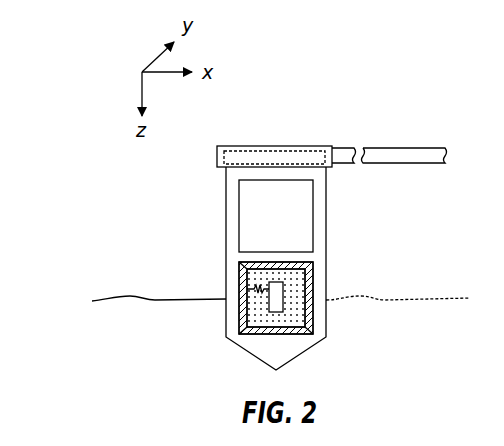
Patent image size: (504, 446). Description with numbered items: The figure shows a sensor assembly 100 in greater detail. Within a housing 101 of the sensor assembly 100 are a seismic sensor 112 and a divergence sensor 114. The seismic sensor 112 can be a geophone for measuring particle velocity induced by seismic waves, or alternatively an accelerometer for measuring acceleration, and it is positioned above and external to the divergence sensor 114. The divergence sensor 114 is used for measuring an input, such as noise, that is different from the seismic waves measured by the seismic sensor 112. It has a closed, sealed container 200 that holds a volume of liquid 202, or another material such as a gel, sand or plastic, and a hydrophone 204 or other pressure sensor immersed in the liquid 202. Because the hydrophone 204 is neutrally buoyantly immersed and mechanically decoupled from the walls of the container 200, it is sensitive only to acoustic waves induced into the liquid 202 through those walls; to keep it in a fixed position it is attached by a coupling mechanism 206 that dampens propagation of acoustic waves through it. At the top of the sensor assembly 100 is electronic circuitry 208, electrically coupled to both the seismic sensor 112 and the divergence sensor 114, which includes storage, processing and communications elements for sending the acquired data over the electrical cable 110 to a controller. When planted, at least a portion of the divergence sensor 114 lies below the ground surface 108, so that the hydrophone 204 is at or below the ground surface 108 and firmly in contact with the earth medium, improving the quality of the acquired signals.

The sensor assembly 100 is at (210, 203).
The electronic circuitry 208 is at (286, 152).
The electrical cable 110 is at (395, 147).
The seismic sensor 112 is at (305, 213).
The container 200 is at (313, 285).
The liquid 202 is at (290, 318).
The housing 101 is at (240, 298).
The coupling mechanism 206 is at (240, 266).
The hydrophone 204 is at (276, 311).
The divergence sensor 114 is at (319, 316).
The ground surface 108 is at (380, 298).